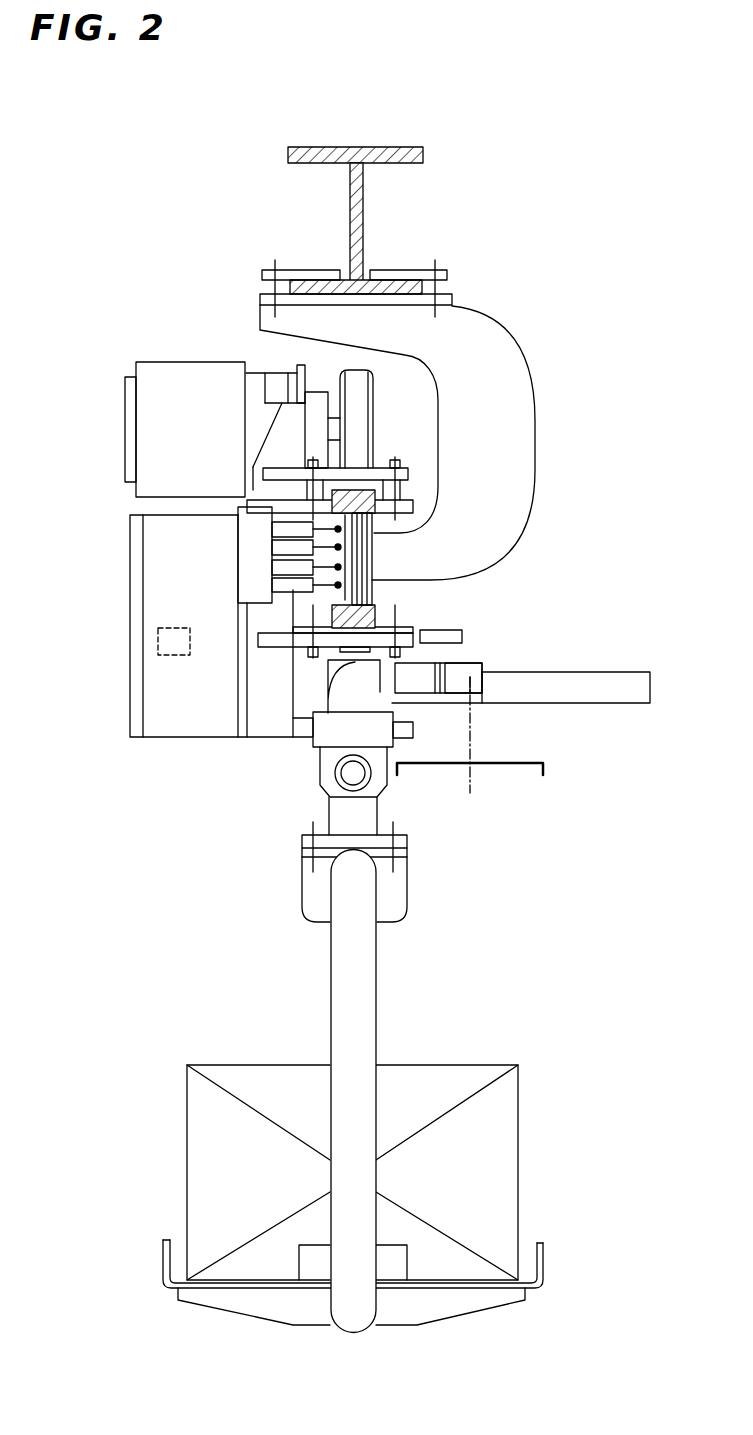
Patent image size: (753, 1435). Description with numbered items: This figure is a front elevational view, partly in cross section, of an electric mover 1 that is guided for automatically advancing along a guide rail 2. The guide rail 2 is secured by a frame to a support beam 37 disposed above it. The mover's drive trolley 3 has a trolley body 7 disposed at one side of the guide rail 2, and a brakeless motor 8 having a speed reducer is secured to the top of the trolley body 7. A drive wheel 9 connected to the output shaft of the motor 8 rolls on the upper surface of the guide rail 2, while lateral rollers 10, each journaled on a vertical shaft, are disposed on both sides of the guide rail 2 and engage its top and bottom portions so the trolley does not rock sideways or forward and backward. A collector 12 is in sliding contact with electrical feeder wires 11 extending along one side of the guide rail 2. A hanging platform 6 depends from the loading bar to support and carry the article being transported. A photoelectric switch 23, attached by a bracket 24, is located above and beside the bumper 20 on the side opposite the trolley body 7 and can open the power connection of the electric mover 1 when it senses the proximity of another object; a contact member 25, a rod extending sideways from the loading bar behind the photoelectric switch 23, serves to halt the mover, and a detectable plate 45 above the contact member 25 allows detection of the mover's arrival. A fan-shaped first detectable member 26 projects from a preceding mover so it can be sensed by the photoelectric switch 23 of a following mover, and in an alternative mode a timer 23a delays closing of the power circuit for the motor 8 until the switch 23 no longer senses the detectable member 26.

The electric mover 1 is at (125, 614).
The guide rail 2 is at (387, 492).
The drive trolley 3 is at (236, 352).
The hanging platform 6 is at (360, 1008).
The trolley body 7 is at (224, 752).
The brakeless motor 8 is at (179, 402).
The drive wheel 9 is at (356, 412).
The lateral rollers 10 is at (300, 505).
The electrical feeder wires 11 is at (373, 548).
The collector 12 is at (295, 568).
The bumper 20 is at (331, 817).
The photoelectric switch 23 is at (470, 678).
The timer 23a is at (153, 652).
The bracket 24 is at (472, 708).
The contact member 25 is at (596, 657).
The first detectable member 26 is at (494, 811).
The support beam 37 is at (383, 186).
The detectable plate 45 is at (528, 603).